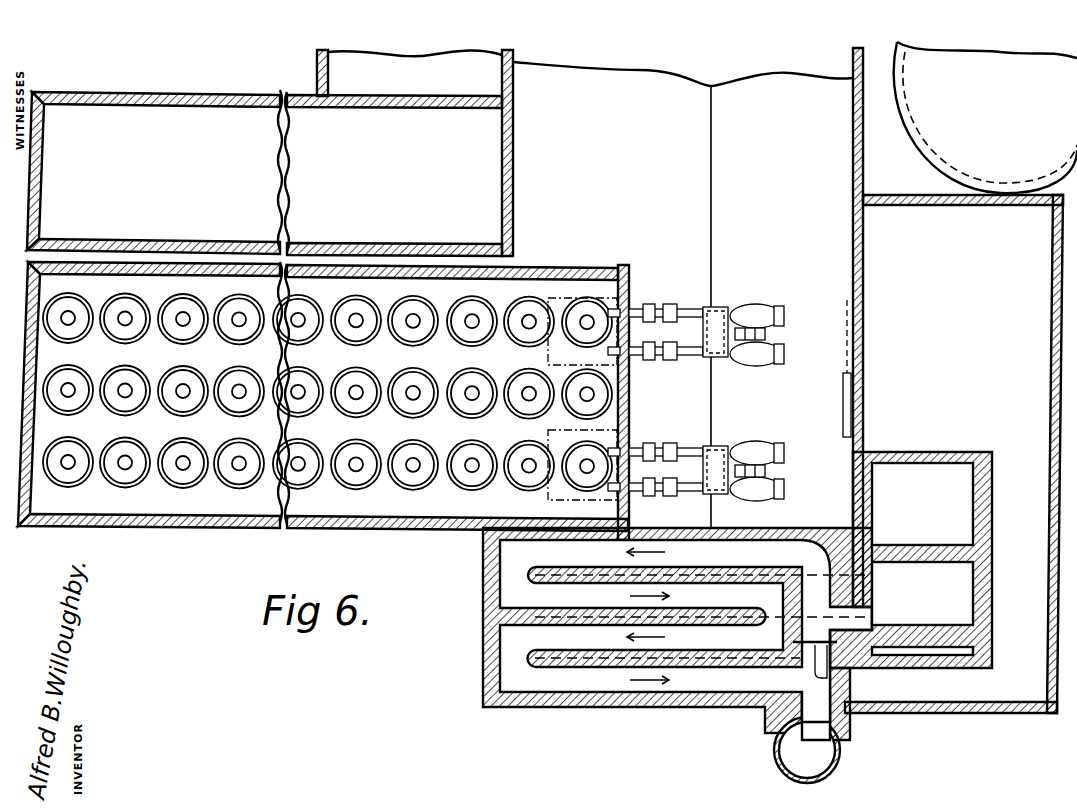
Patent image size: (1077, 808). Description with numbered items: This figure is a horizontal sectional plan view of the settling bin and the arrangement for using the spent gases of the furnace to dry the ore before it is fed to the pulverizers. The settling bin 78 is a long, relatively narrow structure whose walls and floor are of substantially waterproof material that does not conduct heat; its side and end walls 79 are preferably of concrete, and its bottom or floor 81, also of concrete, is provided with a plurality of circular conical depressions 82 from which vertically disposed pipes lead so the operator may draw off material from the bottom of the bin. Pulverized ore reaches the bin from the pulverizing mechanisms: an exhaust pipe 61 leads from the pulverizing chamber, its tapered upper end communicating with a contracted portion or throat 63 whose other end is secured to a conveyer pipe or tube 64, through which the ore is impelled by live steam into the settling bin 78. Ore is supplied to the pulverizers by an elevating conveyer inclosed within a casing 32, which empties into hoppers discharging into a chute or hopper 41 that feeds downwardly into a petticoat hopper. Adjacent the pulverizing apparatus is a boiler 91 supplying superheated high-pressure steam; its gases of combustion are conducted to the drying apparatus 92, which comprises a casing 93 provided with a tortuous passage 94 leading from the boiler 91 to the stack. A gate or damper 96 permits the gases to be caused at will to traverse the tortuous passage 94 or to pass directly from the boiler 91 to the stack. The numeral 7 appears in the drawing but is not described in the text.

The tray side wall 7 is at (28, 378).
The casing 32 is at (768, 335).
The chute or hopper 41 is at (752, 305).
The exhaust pipe 61 is at (722, 302).
The contracted portion or throat 63 is at (672, 302).
The conveyer pipe or tube 64 is at (648, 303).
The settling chamber or bin 78 is at (455, 397).
The side and end walls 79 is at (560, 270).
The bottom or floor 81 is at (232, 498).
The circular conical depressions 82 is at (413, 330).
The boiler 91 is at (548, 355).
The drying apparatus 92 is at (911, 560).
The casing 93 is at (483, 612).
The tortuous passage 94 is at (688, 631).
The gate or damper 96 is at (857, 680).